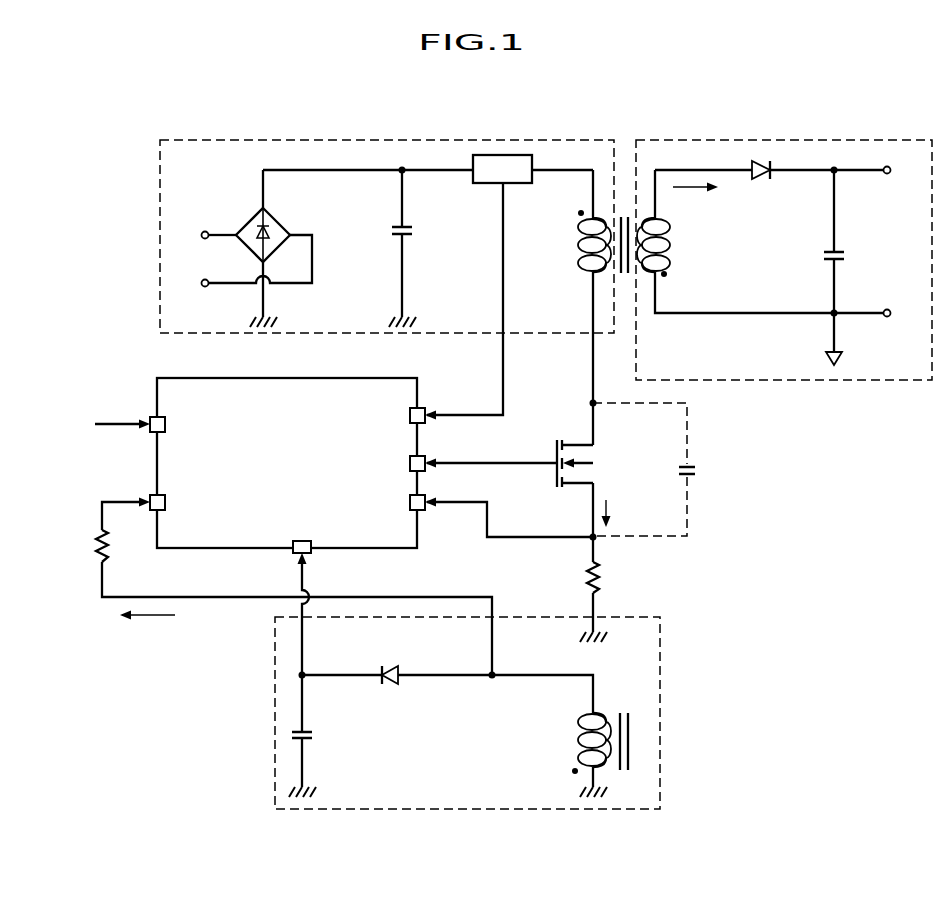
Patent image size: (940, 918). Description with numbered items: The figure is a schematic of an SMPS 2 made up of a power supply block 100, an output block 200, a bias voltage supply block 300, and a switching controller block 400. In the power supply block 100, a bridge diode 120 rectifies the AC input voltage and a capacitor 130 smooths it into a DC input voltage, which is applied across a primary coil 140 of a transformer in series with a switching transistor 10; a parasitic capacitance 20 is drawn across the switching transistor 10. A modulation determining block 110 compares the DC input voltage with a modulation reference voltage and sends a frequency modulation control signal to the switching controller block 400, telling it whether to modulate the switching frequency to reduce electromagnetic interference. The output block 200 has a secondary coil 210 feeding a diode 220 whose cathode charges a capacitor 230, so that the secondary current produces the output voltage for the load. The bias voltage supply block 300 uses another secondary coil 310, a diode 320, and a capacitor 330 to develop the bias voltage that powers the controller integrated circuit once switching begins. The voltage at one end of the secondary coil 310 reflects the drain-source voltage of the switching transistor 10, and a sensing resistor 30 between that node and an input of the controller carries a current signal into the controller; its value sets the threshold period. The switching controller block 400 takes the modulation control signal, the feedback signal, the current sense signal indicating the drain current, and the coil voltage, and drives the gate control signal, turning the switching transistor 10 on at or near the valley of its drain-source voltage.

The SMPS 2 is at (112, 120).
The power supply block 100 is at (160, 228).
The modulation determining block 110 is at (515, 155).
The bridge diode 120 is at (252, 218).
The capacitor 130 is at (414, 248).
The primary coil 140 is at (574, 268).
The output block 200 is at (887, 380).
The secondary coil 210 is at (689, 290).
The diode 220 is at (756, 160).
The capacitor 230 is at (852, 263).
The bias voltage supply block 300 is at (660, 680).
The secondary coil 310 is at (557, 760).
The diode 320 is at (389, 667).
The capacitor 330 is at (283, 756).
The switching controller block 400 is at (157, 380).
The switching transistor 10 is at (653, 486).
The parasitic capacitor CR 20 is at (710, 452).
The sensing resistor 30 is at (86, 575).